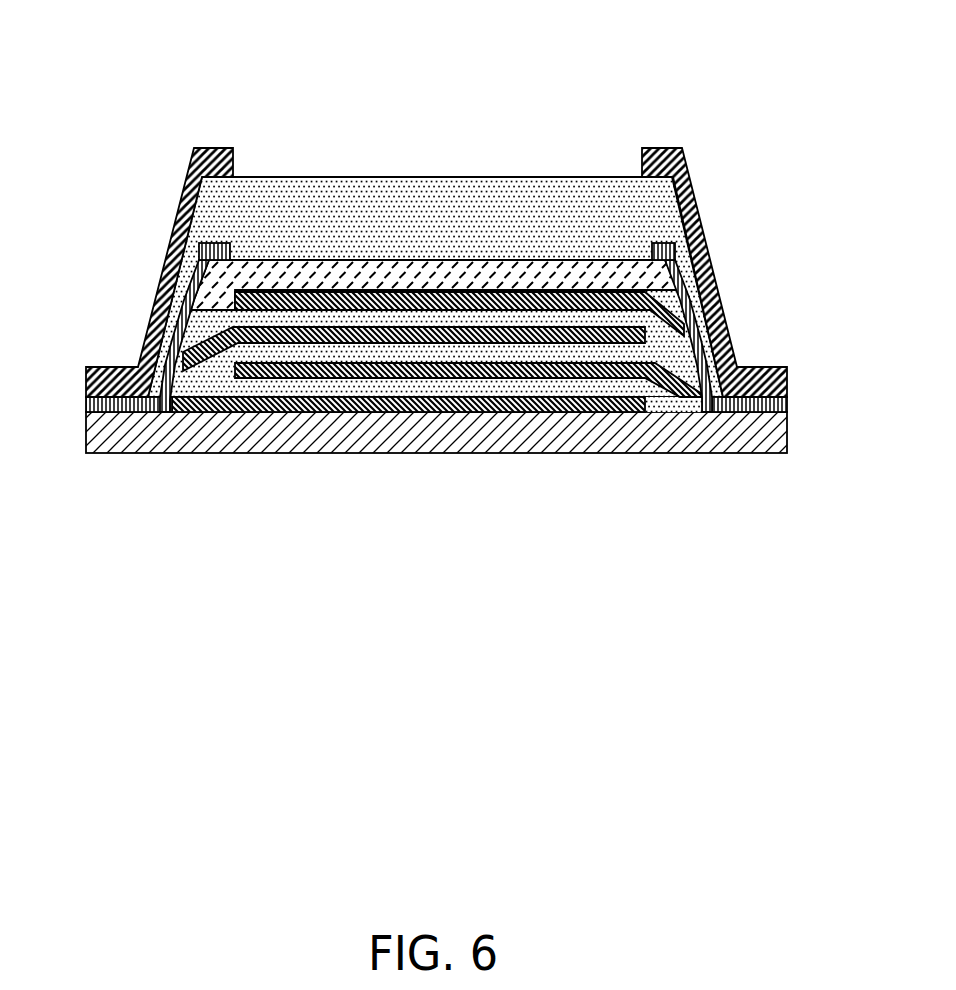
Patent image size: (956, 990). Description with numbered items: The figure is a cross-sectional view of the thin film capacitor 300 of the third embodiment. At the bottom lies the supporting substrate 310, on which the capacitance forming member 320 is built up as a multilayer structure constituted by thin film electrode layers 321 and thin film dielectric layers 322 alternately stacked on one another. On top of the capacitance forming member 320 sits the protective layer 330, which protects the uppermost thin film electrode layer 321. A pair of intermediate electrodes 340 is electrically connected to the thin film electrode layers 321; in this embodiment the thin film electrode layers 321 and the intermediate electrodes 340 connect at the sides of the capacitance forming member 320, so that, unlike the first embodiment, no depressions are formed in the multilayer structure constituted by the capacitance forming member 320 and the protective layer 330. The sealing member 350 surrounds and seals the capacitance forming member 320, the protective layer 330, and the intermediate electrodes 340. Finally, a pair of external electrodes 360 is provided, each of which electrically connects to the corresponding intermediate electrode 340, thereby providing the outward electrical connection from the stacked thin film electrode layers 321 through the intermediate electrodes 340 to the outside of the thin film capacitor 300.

The thin film capacitor 300 is at (438, 302).
The supporting substrate 310 is at (275, 443).
The capacitance forming member 320 is at (437, 443).
The thin film electrode layer 321 is at (530, 405).
The thin film dielectric layer 322 is at (578, 393).
The protective layer 330 is at (515, 277).
The intermediate electrode 340 is at (224, 243).
The sealing member 350 is at (363, 220).
The external electrode 360 is at (160, 270).